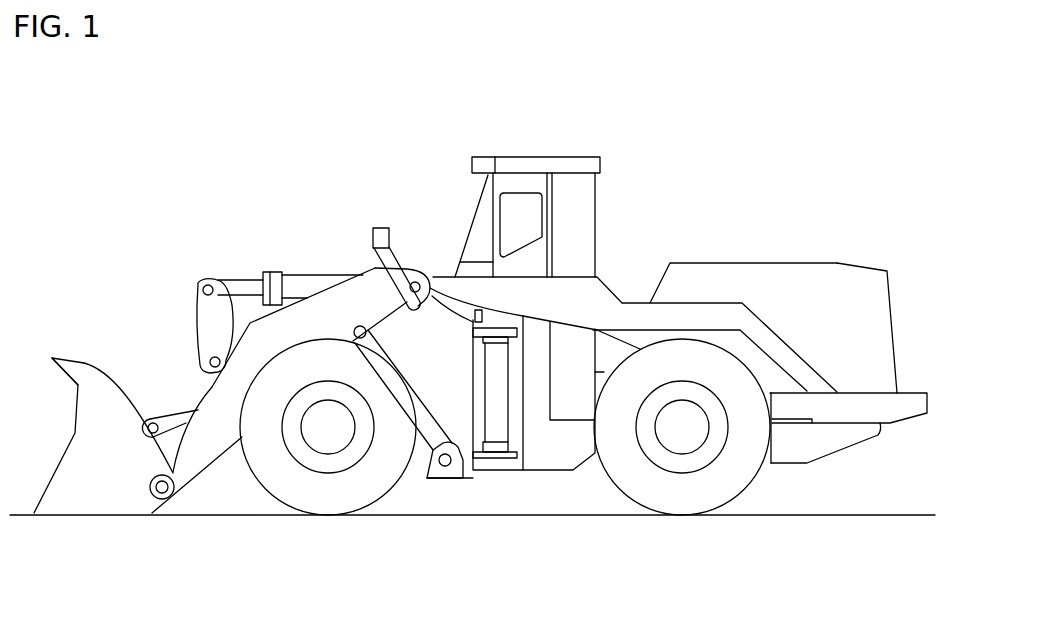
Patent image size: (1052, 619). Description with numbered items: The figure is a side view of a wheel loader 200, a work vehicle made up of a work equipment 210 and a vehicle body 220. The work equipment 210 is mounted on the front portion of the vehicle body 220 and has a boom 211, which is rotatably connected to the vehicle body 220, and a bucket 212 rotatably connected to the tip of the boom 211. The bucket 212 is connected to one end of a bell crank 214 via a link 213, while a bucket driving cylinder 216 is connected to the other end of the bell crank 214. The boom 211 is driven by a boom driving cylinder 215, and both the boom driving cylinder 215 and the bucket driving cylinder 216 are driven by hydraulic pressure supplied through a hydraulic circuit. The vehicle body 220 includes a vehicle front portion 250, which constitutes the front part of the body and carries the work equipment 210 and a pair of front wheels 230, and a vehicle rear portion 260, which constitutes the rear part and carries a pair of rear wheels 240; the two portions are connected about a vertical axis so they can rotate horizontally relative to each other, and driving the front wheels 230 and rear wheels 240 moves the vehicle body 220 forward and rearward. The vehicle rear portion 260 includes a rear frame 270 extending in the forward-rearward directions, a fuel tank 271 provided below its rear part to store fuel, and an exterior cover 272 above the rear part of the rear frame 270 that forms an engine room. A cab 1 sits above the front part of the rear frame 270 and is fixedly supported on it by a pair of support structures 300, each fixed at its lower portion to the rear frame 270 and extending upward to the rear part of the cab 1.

The cab 1 is at (571, 152).
The wheel loader 200 is at (211, 188).
The work equipment 210 is at (180, 347).
The boom 211 is at (262, 332).
The bucket 212 is at (73, 363).
The link 213 is at (168, 413).
The bell crank 214 is at (202, 312).
The boom driving cylinder 215 is at (463, 478).
The bucket driving cylinder 216 is at (287, 263).
The vehicle body 220 is at (655, 209).
The front wheels 230 is at (323, 508).
The rear wheels 240 is at (680, 508).
The vehicle front portion 250 is at (340, 201).
The vehicle rear portion 260 is at (724, 244).
The rear frame 270 is at (790, 414).
The fuel tank 271 is at (830, 443).
The exterior cover 272 is at (870, 273).
The support structure 300 is at (580, 197).